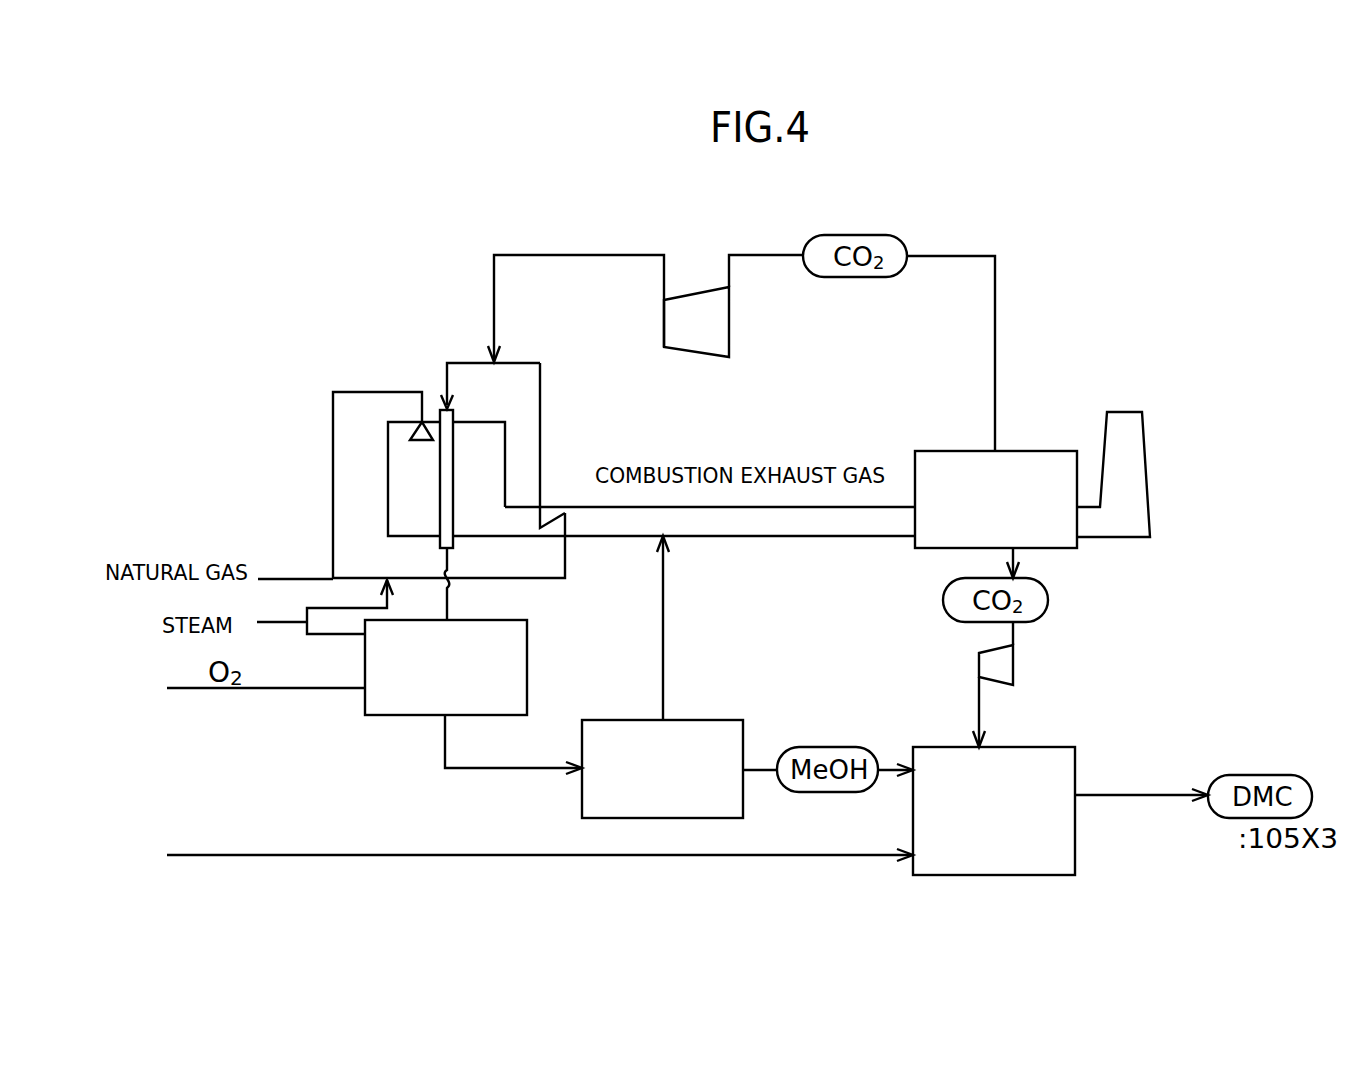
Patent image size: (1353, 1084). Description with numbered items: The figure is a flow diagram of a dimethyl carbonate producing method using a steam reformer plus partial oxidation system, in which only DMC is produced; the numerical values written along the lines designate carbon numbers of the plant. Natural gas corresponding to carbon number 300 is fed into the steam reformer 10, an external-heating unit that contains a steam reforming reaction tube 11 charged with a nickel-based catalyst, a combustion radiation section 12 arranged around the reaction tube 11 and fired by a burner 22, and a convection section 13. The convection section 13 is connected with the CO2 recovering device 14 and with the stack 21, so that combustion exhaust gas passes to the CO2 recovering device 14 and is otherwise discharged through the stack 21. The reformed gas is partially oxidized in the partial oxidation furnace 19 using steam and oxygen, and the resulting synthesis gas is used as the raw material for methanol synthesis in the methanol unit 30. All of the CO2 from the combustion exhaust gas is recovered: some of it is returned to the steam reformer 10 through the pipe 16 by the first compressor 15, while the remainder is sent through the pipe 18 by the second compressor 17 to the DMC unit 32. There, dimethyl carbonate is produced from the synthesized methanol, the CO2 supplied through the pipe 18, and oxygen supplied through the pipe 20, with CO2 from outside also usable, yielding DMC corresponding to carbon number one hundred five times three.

The steam reformer 10 is at (379, 390).
The reaction tube 11 is at (440, 492).
The combustion radiation section 12 is at (400, 517).
The convection section 13 is at (497, 526).
The CO2 recovering device 14 is at (1050, 451).
The first compressor 15 is at (729, 323).
The pipe 16 is at (573, 256).
The second compressor 17 is at (1013, 668).
The pipe 18 is at (979, 703).
The partial oxidation furnace 19 is at (387, 743).
The pipe 20 is at (465, 857).
The stack 21 is at (1143, 447).
The burner 22 is at (412, 430).
The methanol synthesis unit 30 is at (578, 790).
The DMC synthesis unit 32 is at (987, 877).
The natural gas supply line 300 is at (295, 563).